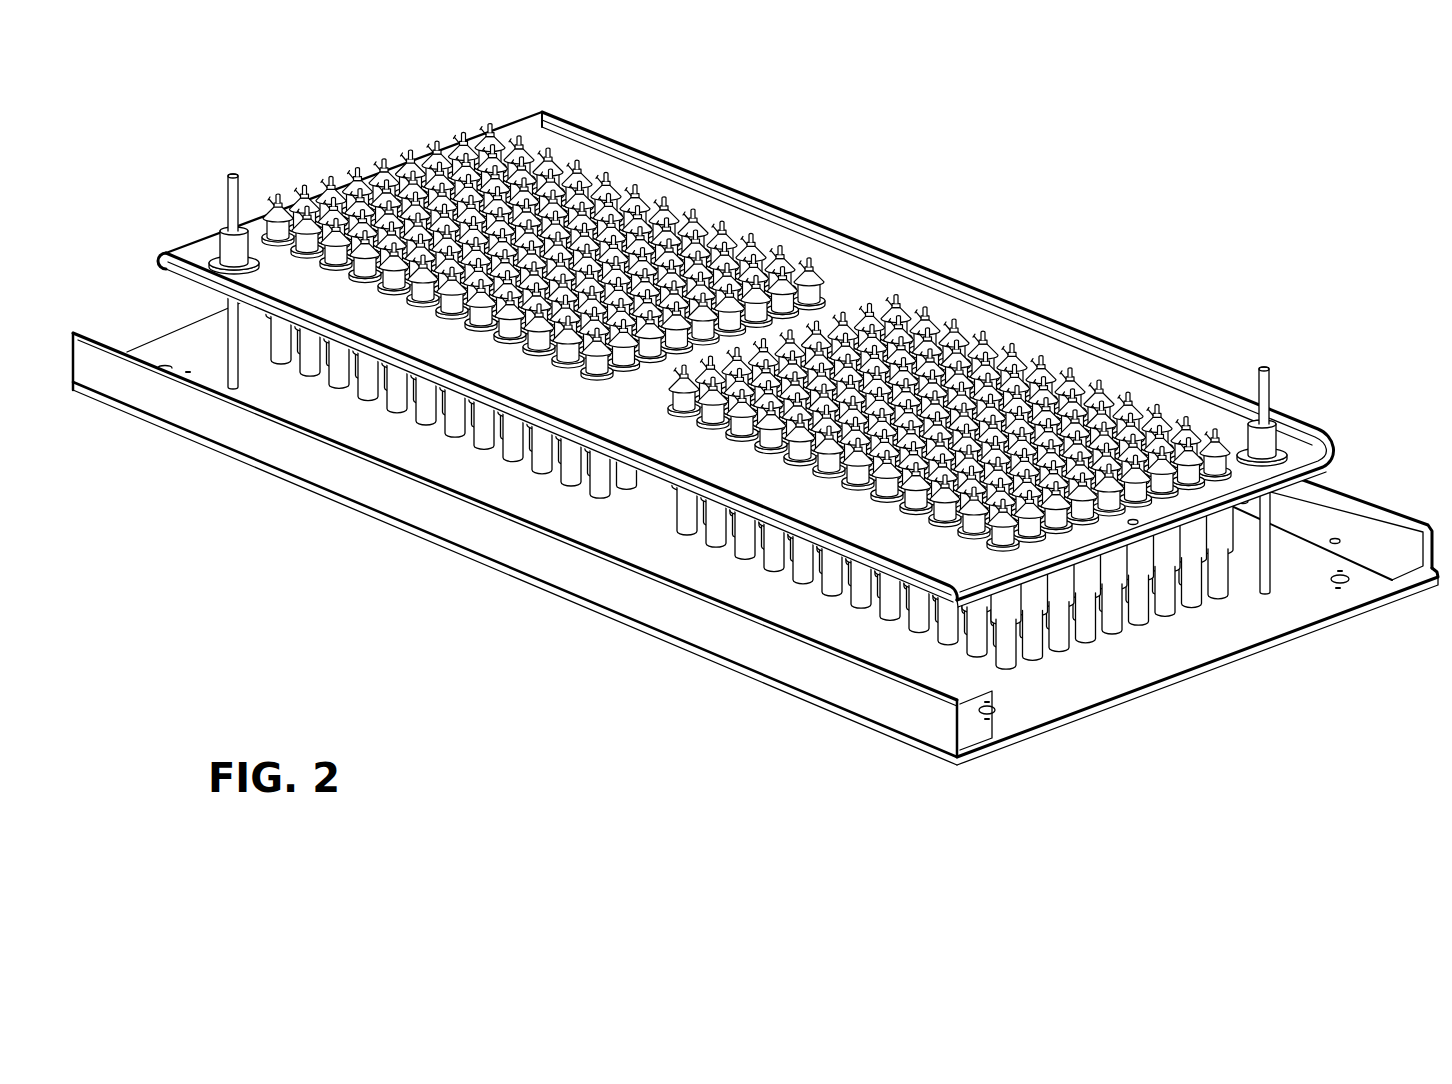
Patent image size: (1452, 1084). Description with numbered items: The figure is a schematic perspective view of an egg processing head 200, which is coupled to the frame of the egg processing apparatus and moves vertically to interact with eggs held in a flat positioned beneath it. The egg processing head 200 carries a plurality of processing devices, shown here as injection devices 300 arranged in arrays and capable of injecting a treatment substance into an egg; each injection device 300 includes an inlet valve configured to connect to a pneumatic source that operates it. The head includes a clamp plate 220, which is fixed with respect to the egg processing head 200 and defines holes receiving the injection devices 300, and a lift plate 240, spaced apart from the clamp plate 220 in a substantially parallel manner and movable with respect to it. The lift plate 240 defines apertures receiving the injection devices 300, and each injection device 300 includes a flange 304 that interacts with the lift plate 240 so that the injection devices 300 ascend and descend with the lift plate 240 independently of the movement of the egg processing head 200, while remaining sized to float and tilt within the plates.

The egg processing head 200 is at (755, 423).
The clamp plate 220 is at (887, 651).
The lift plate 240 is at (647, 198).
The injection device 300 is at (751, 398).
The flange 304 is at (250, 232).